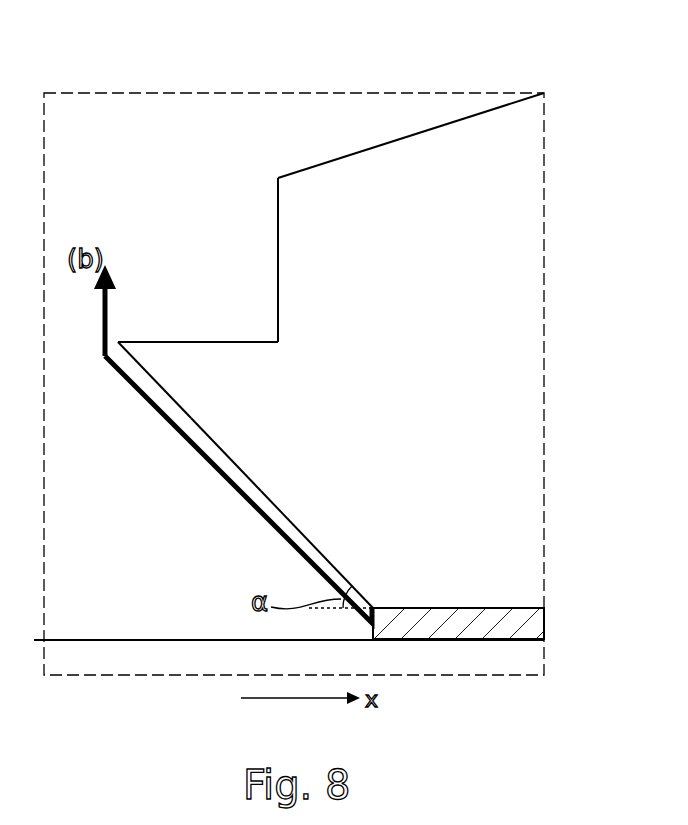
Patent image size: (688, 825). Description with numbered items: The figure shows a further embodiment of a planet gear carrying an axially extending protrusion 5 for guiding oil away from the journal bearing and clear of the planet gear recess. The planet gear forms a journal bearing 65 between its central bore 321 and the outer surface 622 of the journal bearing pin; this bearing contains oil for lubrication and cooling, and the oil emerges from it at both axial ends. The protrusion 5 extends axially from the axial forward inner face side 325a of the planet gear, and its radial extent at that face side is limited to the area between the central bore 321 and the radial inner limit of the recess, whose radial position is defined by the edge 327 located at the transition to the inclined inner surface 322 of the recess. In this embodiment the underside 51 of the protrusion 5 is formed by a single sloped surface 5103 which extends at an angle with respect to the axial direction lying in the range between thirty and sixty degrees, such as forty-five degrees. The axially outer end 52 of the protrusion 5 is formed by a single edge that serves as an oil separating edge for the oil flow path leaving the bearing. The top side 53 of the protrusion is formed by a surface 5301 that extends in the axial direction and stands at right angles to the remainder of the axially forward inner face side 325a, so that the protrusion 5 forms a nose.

The inclined inner surface 322 is at (430, 127).
The edge 327 is at (277, 176).
The axial forward inner face side 325a is at (277, 220).
The top side 53 is at (155, 340).
The surface 5301 is at (227, 340).
The axially outer end 52 is at (117, 340).
The underside 51 is at (212, 440).
The sloped surface 5103 is at (287, 518).
The protrusion 5 is at (197, 402).
The central bore 321 is at (468, 606).
The journal bearing 65 is at (530, 618).
The outer surface 622 is at (203, 638).